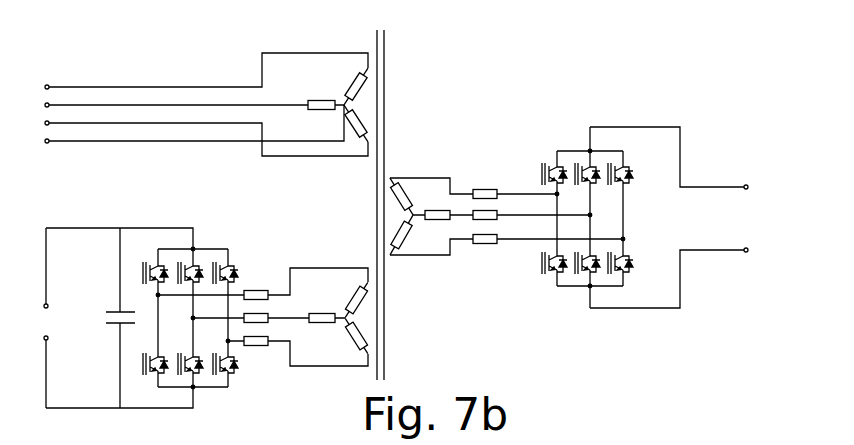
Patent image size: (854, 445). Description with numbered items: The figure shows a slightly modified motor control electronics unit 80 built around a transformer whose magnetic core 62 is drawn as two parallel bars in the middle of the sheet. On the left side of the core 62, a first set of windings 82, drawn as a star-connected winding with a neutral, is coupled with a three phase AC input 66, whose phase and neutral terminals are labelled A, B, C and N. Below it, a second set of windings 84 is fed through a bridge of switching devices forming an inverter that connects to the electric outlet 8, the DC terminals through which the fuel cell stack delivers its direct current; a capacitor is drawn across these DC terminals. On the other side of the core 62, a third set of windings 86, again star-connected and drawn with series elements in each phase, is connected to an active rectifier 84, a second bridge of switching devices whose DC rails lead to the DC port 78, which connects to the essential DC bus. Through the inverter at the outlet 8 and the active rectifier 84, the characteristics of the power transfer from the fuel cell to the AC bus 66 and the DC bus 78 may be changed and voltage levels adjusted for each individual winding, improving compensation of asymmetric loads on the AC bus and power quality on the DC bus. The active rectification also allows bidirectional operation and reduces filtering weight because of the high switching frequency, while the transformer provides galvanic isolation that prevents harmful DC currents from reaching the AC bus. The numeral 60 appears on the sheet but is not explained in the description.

The electric outlet 8 is at (59, 333).
The power conversion system 60 is at (437, 222).
The magnetic core 62 is at (404, 88).
The three phase AC input 66 is at (69, 63).
The DC port 78 is at (762, 192).
The motor control electronics unit 80 is at (553, 78).
The first set of windings 82 is at (290, 43).
The second set of windings 84 is at (689, 113).
The third set of windings 86 is at (431, 283).